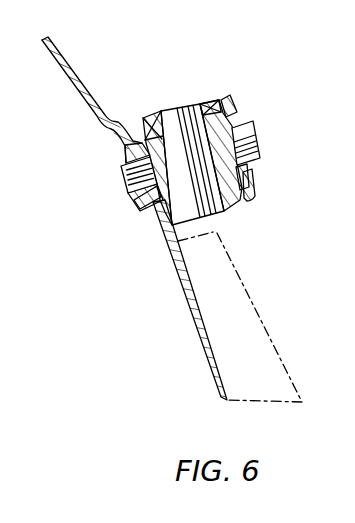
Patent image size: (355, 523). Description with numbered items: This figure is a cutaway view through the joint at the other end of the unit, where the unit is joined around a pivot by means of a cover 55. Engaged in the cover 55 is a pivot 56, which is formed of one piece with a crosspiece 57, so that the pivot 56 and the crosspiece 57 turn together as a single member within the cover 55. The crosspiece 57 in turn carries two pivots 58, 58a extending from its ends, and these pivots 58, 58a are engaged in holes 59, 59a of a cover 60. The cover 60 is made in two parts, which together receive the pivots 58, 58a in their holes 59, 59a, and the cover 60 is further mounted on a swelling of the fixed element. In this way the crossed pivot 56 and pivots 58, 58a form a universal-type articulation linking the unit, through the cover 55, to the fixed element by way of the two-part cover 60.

The cover 55 is at (152, 121).
The pivot 56 is at (176, 122).
The crosspiece 57 is at (219, 136).
The pivot 58 is at (246, 142).
The hole 59 is at (258, 178).
The cover 60 is at (161, 249).
The pivot 58a is at (140, 170).
The hole 59a is at (145, 212).